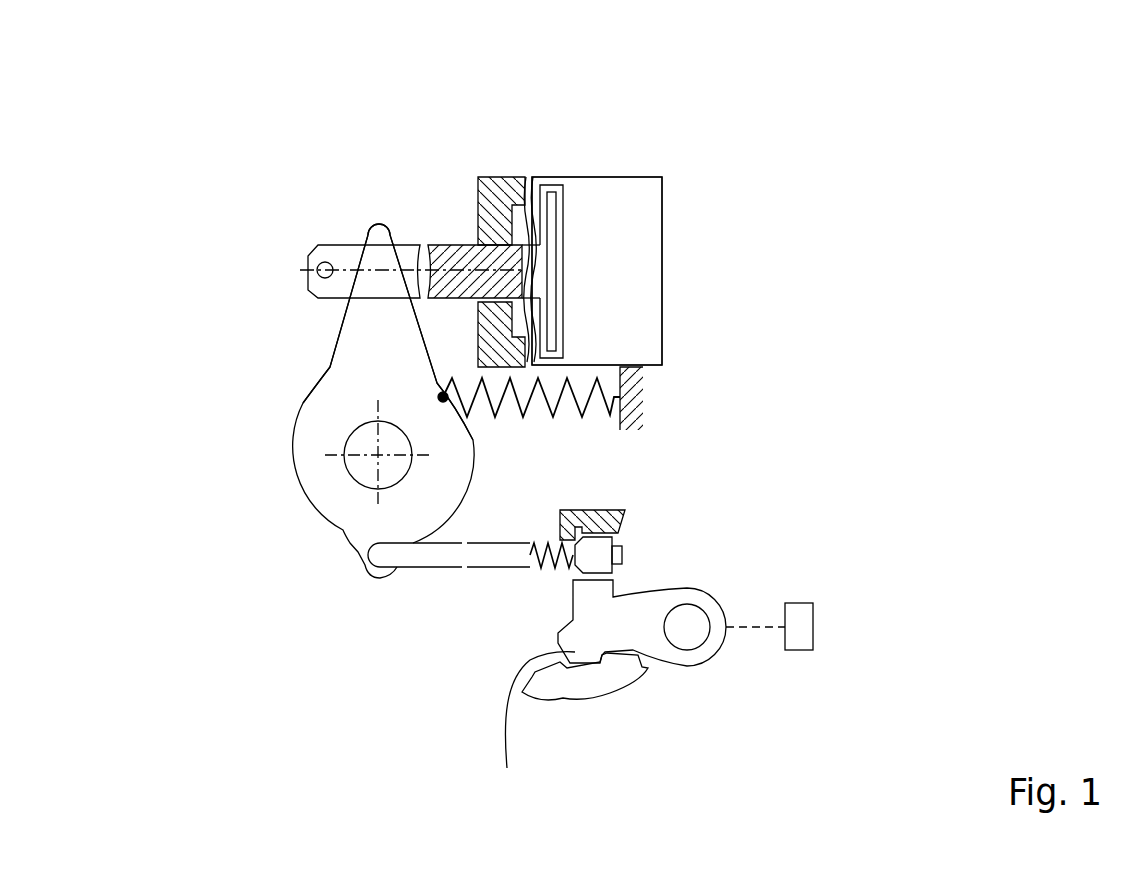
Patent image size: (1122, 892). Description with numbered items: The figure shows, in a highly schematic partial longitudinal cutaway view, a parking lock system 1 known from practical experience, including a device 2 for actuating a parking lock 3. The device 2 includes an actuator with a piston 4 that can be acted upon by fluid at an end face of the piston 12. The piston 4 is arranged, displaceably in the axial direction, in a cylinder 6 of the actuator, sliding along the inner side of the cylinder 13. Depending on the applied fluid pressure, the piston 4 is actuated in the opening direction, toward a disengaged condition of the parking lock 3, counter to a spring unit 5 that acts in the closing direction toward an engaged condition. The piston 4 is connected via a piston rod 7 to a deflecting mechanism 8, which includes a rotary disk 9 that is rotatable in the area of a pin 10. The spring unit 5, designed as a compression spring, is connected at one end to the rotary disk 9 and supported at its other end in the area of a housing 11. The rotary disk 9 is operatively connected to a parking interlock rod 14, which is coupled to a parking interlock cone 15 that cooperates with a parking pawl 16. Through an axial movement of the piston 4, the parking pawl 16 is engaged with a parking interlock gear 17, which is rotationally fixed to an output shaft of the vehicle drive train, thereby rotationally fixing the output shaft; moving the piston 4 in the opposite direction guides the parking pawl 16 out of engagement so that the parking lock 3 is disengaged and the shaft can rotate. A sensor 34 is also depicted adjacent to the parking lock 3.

The parking lock system 1 is at (233, 192).
The device 2 is at (667, 208).
The parking lock 3 is at (781, 602).
The piston 4 is at (553, 207).
The spring unit 5 is at (533, 410).
The cylinder 6 is at (630, 177).
The piston rod 7 is at (445, 255).
The deflecting mechanism 8 is at (253, 477).
The rotary disk 9 is at (357, 327).
The pin 10 is at (357, 435).
The housing 11 is at (640, 390).
The end face of the piston 12 is at (530, 177).
The inner side of the cylinder 13 is at (478, 192).
The parking interlock rod 14 is at (437, 557).
The parking interlock cone 15 is at (602, 555).
The parking pawl 16 is at (575, 652).
The parking interlock gear 17 is at (593, 682).
The sensor 34 is at (799, 637).